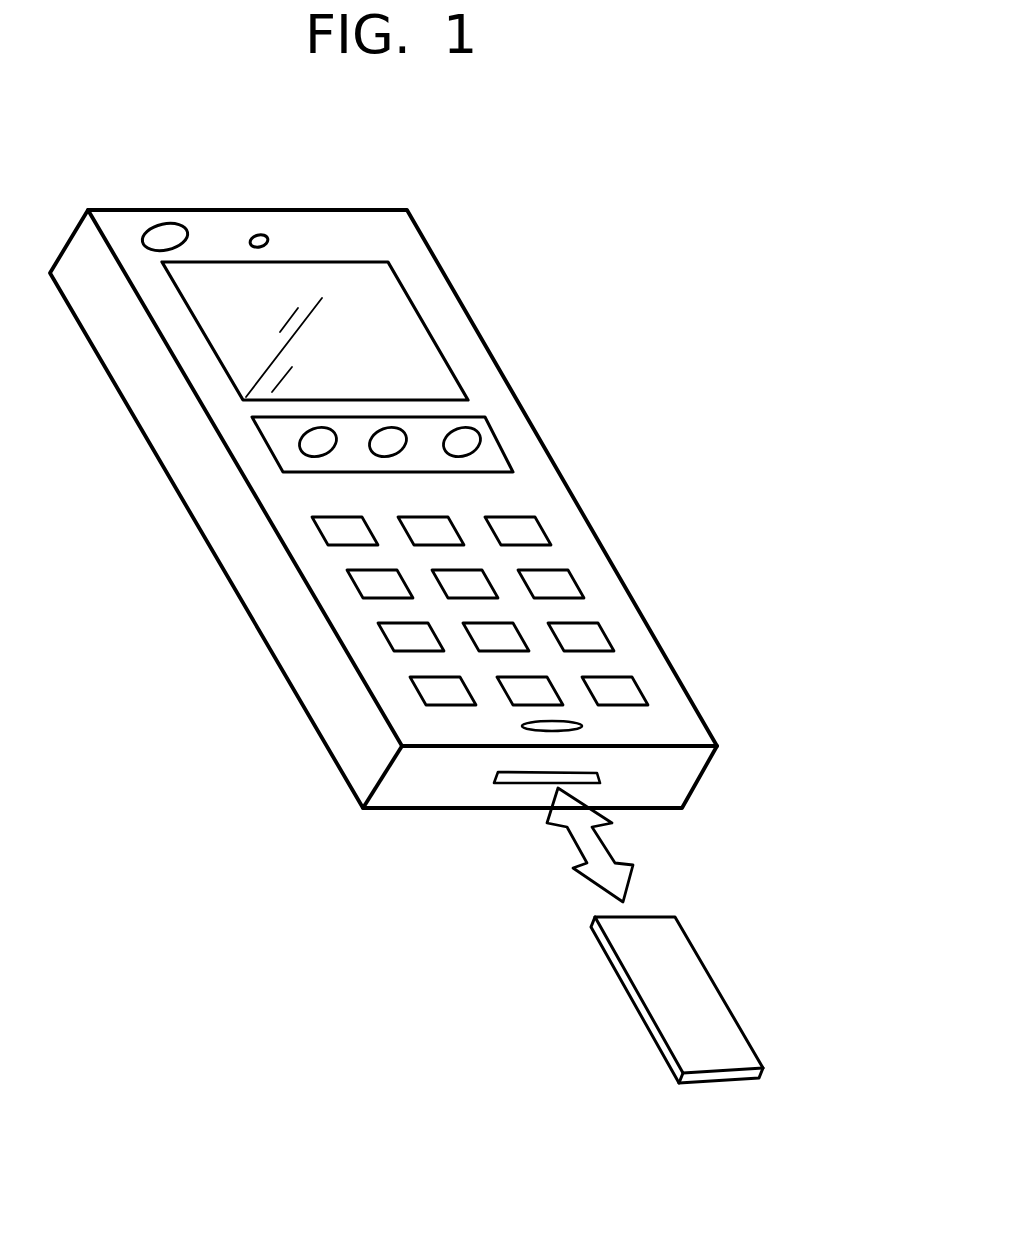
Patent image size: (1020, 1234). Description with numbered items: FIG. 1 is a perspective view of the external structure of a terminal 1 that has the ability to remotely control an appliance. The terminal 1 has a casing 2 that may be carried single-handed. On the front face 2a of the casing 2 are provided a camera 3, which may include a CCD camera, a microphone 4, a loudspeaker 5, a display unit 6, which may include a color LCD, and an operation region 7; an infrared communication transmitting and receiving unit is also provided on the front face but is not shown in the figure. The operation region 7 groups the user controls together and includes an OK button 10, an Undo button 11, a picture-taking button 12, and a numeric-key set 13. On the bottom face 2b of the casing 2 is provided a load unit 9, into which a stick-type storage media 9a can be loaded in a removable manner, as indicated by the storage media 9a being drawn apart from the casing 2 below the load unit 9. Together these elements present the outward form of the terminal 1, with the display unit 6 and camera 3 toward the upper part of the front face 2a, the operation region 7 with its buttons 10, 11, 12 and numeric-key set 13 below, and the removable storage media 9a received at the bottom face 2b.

The terminal 1 is at (434, 529).
The casing 2 is at (434, 509).
The front face 2a is at (490, 385).
The bottom face 2b is at (683, 777).
The camera 3 is at (148, 222).
The microphone 4 is at (582, 726).
The loudspeaker 5 is at (254, 234).
The display unit 6 is at (398, 312).
The operation region 7 is at (489, 559).
The load unit 9 is at (512, 781).
The stick-type storage media 9a is at (698, 1007).
The OK button 10 is at (318, 445).
The Undo button 11 is at (388, 445).
The picture-taking button 12 is at (467, 467).
The numeric-key set 13 is at (355, 614).